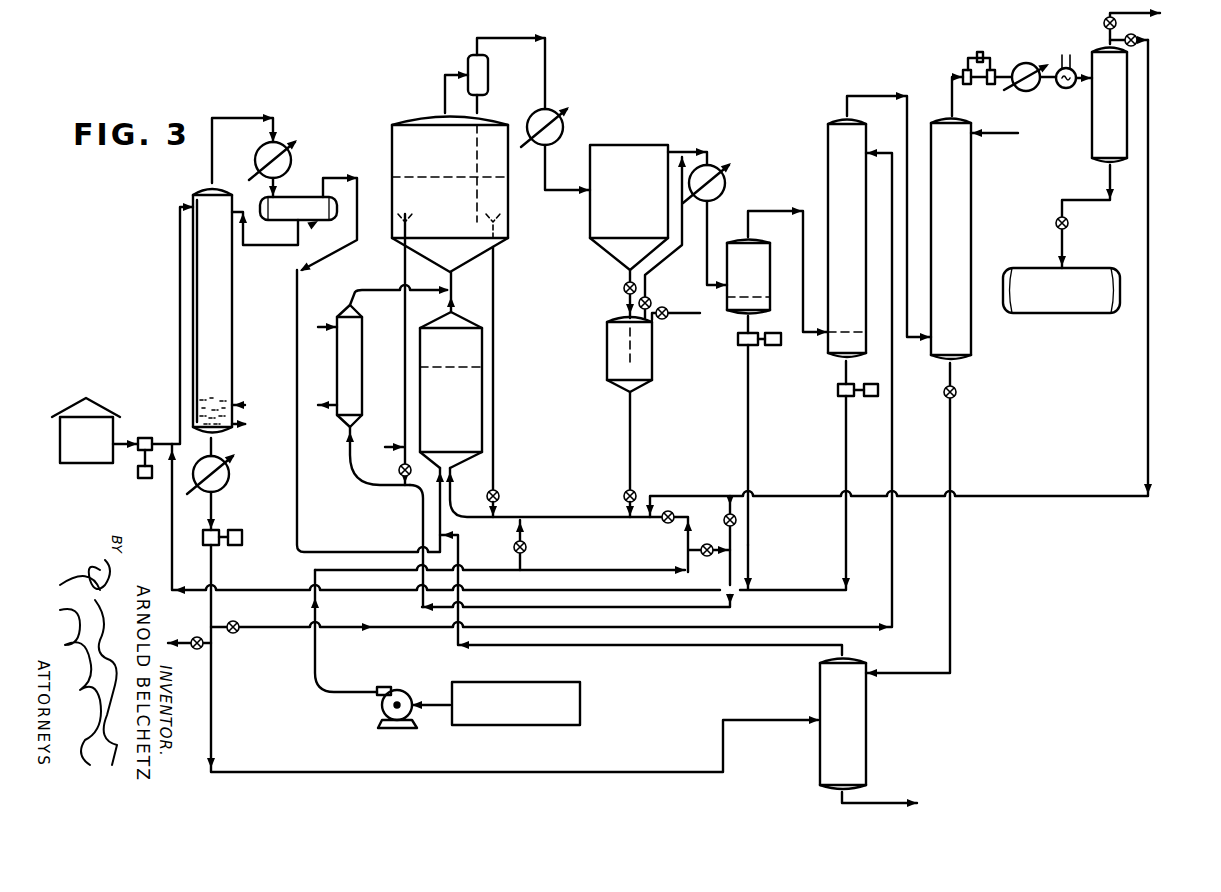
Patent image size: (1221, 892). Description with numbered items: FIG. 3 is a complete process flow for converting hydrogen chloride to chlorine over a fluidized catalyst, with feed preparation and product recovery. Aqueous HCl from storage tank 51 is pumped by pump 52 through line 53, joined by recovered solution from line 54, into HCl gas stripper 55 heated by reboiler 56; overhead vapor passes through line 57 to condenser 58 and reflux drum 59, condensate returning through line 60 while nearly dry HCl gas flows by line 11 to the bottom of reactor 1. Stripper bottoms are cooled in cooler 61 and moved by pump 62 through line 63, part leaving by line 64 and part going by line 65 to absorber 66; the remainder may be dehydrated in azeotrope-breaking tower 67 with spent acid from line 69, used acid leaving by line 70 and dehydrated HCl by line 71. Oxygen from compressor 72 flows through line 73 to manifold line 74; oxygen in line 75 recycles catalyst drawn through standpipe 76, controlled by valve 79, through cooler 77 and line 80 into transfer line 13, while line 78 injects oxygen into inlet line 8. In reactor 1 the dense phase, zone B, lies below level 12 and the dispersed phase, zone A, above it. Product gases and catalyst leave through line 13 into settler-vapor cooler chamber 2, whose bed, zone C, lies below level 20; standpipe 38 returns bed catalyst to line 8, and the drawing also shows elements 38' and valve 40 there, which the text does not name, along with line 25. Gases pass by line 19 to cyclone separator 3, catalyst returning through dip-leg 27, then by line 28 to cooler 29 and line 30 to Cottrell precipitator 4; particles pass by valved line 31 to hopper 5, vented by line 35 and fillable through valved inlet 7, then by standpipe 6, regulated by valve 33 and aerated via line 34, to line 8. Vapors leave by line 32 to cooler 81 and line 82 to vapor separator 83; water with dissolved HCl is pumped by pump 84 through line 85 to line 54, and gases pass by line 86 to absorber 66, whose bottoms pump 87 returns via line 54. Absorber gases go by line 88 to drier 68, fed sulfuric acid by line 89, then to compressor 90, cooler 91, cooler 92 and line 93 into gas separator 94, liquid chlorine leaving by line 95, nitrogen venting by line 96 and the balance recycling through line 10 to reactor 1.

The catalytic reactor 1 is at (431, 318).
The settler-vapor cooler chamber 2 is at (398, 120).
The cyclone separator 3 is at (492, 70).
The Cottrell precipitator 4 is at (612, 142).
The catalyst surge hopper 5 is at (655, 360).
The standpipe 6 is at (633, 430).
The valved inlet 7 is at (672, 310).
The reactor inlet line 8 is at (560, 516).
The recycle line 10 is at (690, 495).
The HCl feed line 11 is at (298, 497).
The dense phase level 12 is at (465, 370).
The product outlet line 13 is at (454, 308).
The overhead withdrawal line 19 is at (450, 72).
The bed level 20 is at (396, 172).
The catalyst circulation line 25 is at (416, 520).
The cyclone dip-leg 27 is at (480, 106).
The cyclone overhead line 28 is at (547, 63).
The cooler 29 is at (550, 112).
The cooled vapor line 30 is at (558, 192).
The valved line 31 is at (625, 268).
The product vapor line 32 is at (690, 150).
The valve 33 is at (623, 497).
The aeration line 34 is at (622, 484).
The vent line 35 is at (664, 258).
The standpipe 38 is at (512, 368).
The standpipe branch 38' is at (515, 468).
The valve 40 is at (502, 497).
The storage tank 51 is at (85, 462).
The pump 52 is at (138, 480).
The feed line 53 is at (130, 437).
The recovered solution line 54 is at (170, 516).
The HCl gas stripper 55 is at (192, 195).
The reboiler 56 is at (225, 396).
The stripper overhead line 57 is at (237, 118).
The condenser 58 is at (285, 128).
The reflux drum 59 is at (298, 223).
The reflux line 60 is at (260, 245).
The cooler 61 is at (236, 476).
The pump 62 is at (235, 546).
The bottoms line 63 is at (209, 568).
The withdrawal line 64 is at (195, 650).
The absorber feed line 65 is at (262, 630).
The hydrogen chloride absorber 66 is at (828, 138).
The azeotrope-breaking tower 67 is at (958, 655).
The chlorine dehydrating tower 68 is at (938, 116).
The spent acid line 69 is at (953, 424).
The acid outlet line 70 is at (880, 803).
The dehydrated HCl line 71 is at (772, 648).
The compressor 72 is at (403, 692).
The oxygen line 73 is at (353, 694).
The manifold line 74 is at (556, 575).
The oxygen branch line 75 is at (696, 554).
The standpipe 76 is at (400, 269).
The external cooler 77 is at (338, 310).
The oxygen injection line 78 is at (527, 542).
The valve 79 is at (398, 468).
The cooled catalyst line 80 is at (360, 296).
The cooler 81 is at (727, 190).
The cooled vapor line 82 is at (710, 226).
The vapor separator 83 is at (762, 240).
The pump 84 is at (771, 347).
The solution return line 85 is at (750, 418).
The gas line 86 is at (780, 210).
The pump 87 is at (838, 396).
The absorber overhead line 88 is at (870, 96).
The acid supply line 89 is at (998, 132).
The compressor 90 is at (978, 52).
The cooler 91 is at (1021, 62).
The refrigeration cooler 92 is at (1058, 90).
The refrigerated gas line 93 is at (1079, 90).
The gas separator 94 is at (1094, 50).
The chlorine product line 95 is at (1075, 210).
The vent line 96 is at (1124, 38).
The dispersed phase zone A is at (475, 354).
The dense phase zone B is at (470, 416).
The settler catalyst bed zone C is at (400, 203).